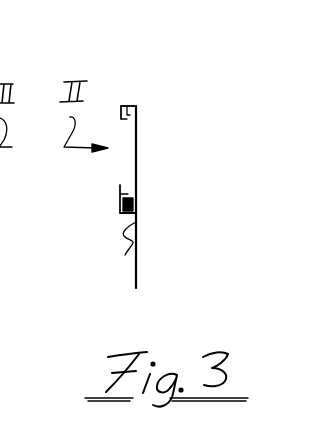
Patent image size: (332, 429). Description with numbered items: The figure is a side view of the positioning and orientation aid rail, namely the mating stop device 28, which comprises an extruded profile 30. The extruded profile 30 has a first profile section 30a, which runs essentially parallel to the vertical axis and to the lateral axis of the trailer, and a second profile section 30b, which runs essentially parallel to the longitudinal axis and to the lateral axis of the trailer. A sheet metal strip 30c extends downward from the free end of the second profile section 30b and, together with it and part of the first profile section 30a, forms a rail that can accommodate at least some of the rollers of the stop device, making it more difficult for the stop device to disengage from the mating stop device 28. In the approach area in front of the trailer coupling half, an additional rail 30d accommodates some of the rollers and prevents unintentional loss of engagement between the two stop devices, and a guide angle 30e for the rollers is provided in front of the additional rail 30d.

The mating stop device 28 is at (137, 263).
The extruded profile 30 is at (139, 121).
The first profile section 30a is at (137, 230).
The second profile section 30b is at (138, 112).
The sheet metal strip 30c is at (122, 116).
The additional rail 30d is at (111, 194).
The guide angle 30e is at (128, 215).